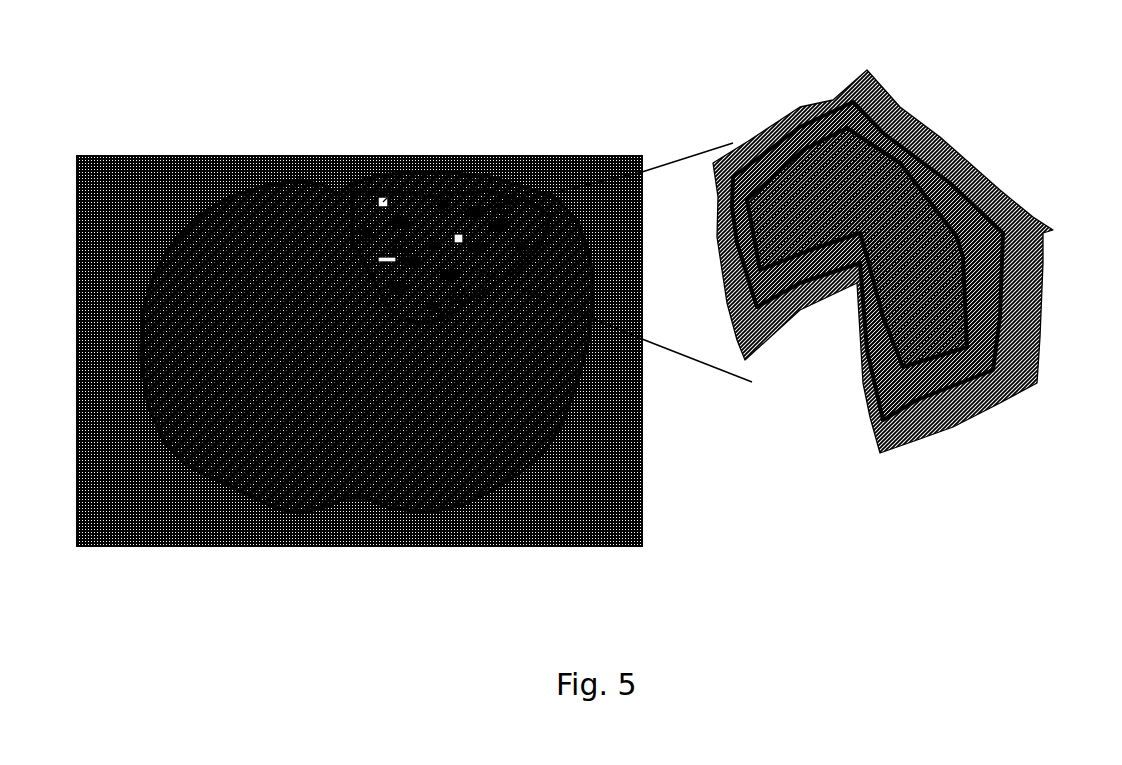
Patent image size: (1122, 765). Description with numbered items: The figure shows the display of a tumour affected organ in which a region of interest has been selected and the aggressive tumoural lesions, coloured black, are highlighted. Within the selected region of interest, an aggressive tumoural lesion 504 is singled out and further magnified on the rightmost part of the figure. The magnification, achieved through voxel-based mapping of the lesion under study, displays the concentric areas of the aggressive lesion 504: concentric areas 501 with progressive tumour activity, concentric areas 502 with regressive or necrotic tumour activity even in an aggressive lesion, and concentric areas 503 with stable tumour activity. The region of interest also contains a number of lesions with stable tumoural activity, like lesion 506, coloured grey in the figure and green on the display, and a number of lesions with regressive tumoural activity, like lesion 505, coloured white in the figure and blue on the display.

The concentric areas with progressive tumour activity 501 is at (922, 150).
The concentric areas with regressive or necrotic tumour activity 502 is at (910, 227).
The concentric areas with stable tumour activity 503 is at (978, 210).
The aggressive tumoural lesion 504 is at (388, 197).
The lesion with regressive tumoural activity 505 is at (456, 176).
The lesion with stable tumoural activity 506 is at (437, 238).